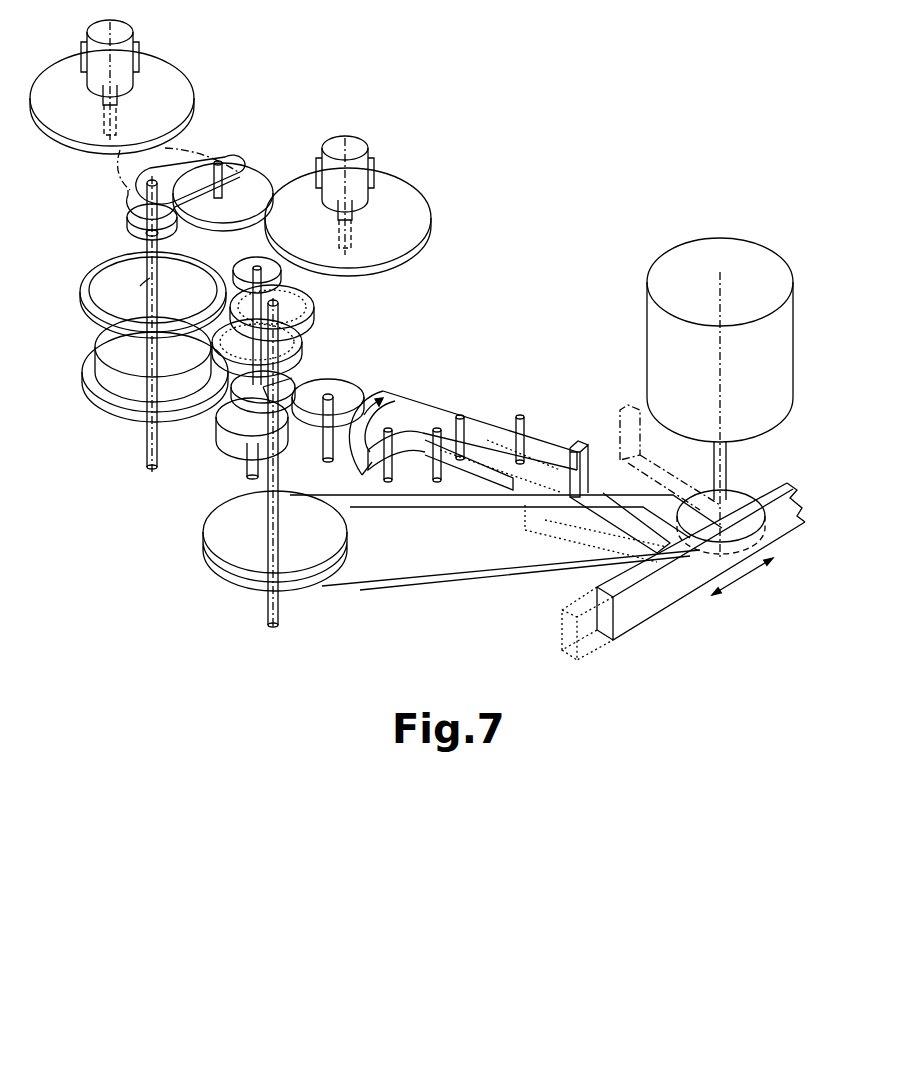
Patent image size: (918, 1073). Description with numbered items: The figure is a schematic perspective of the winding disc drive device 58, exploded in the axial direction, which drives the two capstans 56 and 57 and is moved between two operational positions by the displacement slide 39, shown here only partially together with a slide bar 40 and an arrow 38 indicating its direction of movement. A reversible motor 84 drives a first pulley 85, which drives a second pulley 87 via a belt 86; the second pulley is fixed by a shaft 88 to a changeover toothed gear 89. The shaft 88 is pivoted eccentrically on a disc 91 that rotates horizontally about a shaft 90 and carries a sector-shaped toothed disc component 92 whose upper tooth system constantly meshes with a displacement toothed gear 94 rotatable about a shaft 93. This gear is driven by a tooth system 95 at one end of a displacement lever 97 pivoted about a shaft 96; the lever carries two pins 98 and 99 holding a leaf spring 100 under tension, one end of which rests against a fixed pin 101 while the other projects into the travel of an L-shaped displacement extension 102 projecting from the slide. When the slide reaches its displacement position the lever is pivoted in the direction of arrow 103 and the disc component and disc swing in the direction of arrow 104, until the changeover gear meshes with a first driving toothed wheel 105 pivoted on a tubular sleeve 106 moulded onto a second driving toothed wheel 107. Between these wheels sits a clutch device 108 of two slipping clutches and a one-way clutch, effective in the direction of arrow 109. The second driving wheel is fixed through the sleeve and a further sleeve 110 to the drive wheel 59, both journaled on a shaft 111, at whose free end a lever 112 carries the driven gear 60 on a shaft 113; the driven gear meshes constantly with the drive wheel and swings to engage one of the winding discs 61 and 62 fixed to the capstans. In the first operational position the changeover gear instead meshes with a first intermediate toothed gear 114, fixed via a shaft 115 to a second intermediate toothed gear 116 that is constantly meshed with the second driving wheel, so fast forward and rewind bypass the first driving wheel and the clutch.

The direction of movement 38 is at (740, 578).
The displacement slide 39 is at (622, 622).
The slide bar 40 is at (632, 593).
The capstan 56 is at (127, 33).
The capstan 57 is at (358, 148).
The winding disc drive device 58 is at (160, 505).
The drive wheel 59 is at (165, 228).
The driven gear 60 is at (255, 180).
The winding disc 61 is at (182, 90).
The winding disc 62 is at (418, 205).
The reversible motor 84 is at (652, 310).
The first pulley 85 is at (736, 498).
The belt 86 is at (415, 578).
The second pulley 87 is at (346, 557).
The shaft 88 is at (280, 440).
The changeover toothed gear 89 is at (306, 303).
The shaft 90 is at (247, 470).
The disc 91 is at (220, 414).
The toothed disc component 92 is at (286, 382).
The shaft 93 is at (326, 458).
The displacement toothed gear 94 is at (332, 386).
The tooth system 95 is at (366, 440).
The shaft 96 is at (441, 478).
The displacement lever 97 is at (420, 415).
The pin 98 is at (461, 416).
The pin 99 is at (525, 430).
The leaf spring 100 is at (492, 440).
The fixed pin 101 is at (394, 478).
The displacement extension 102 is at (583, 445).
The arrow 103 is at (395, 401).
The arrow 104 is at (238, 448).
The first driving toothed wheel 105 is at (82, 312).
The tubular sleeve 106 is at (131, 290).
The second driving toothed wheel 107 is at (92, 396).
The clutch device 108 is at (93, 364).
The arrow 109 is at (94, 300).
The further sleeve 110 is at (146, 242).
The shaft 111 is at (147, 452).
The lever 112 is at (180, 167).
The shaft 113 is at (220, 163).
The first intermediate toothed gear 114 is at (246, 268).
The shaft 115 is at (262, 270).
The second intermediate toothed gear 116 is at (296, 356).